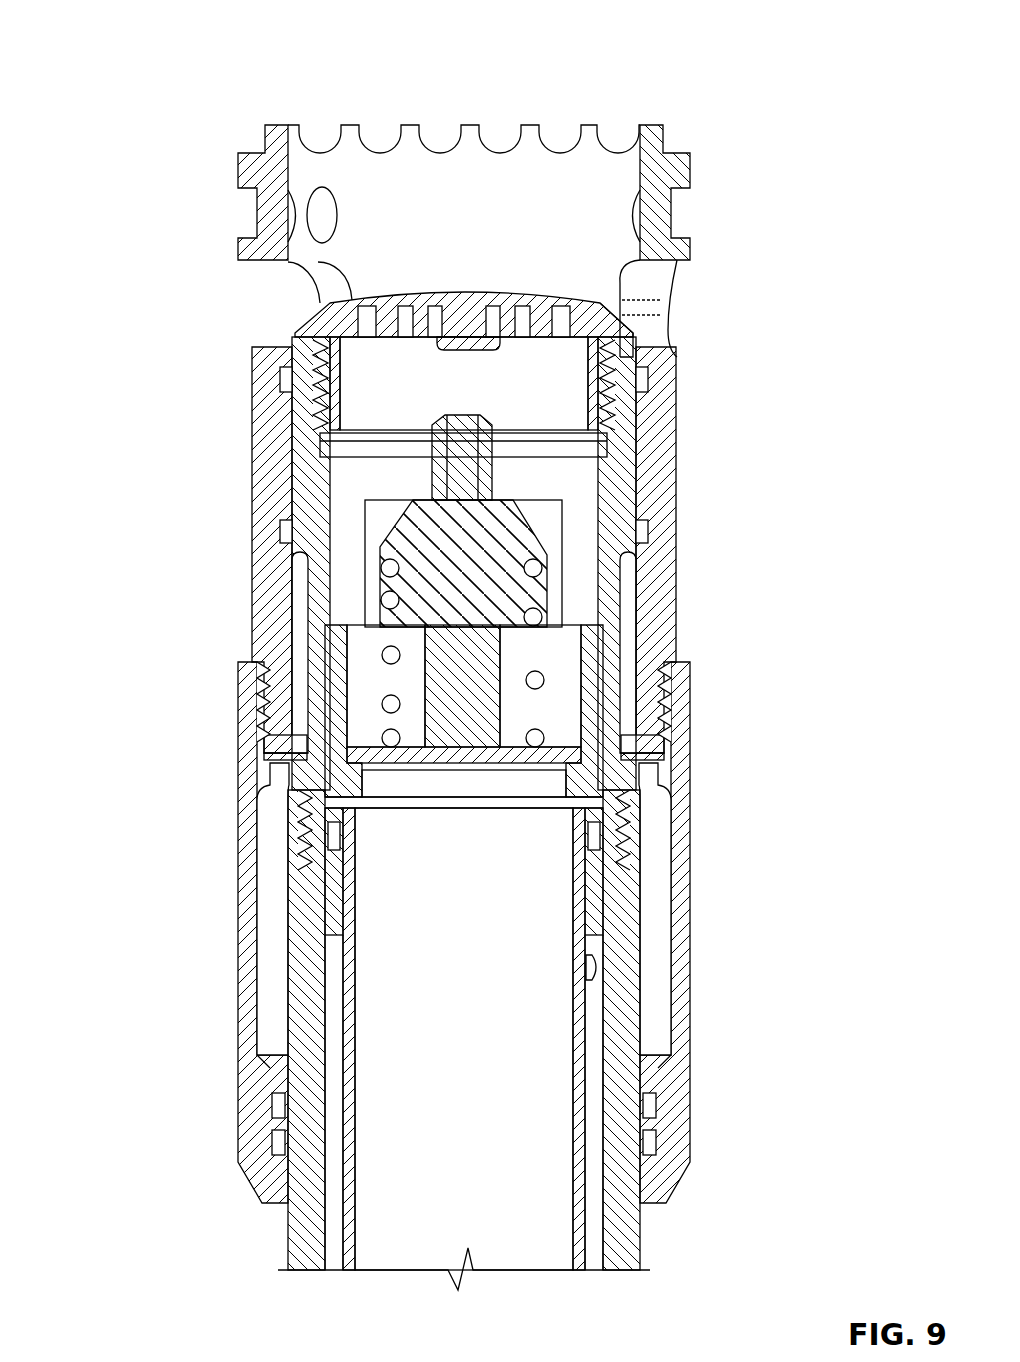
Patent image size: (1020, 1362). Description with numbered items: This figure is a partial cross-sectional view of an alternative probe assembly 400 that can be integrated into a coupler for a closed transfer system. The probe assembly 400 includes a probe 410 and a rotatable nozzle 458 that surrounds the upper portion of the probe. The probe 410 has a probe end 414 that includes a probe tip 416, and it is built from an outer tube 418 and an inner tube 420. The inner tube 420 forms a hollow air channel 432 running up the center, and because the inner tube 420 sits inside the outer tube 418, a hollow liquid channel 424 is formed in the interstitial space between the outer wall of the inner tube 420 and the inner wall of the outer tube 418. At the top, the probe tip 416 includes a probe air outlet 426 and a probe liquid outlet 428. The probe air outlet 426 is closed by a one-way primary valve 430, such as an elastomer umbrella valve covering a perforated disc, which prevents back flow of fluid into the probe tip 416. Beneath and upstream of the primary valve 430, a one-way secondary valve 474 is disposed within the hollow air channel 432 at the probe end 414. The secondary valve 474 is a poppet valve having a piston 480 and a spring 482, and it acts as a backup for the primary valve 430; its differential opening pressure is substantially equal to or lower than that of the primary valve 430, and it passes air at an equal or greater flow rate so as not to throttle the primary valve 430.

The probe assembly 400 is at (118, 50).
The one-way primary valve 430 is at (478, 284).
The probe air outlet 426 is at (540, 372).
The probe tip 416 is at (618, 455).
The rotatable nozzle 458 is at (665, 512).
The one-way secondary valve 474 is at (610, 625).
The spring 482 is at (545, 680).
The piston 480 is at (572, 765).
The probe end 414 is at (216, 913).
The hollow air channel 432 is at (392, 942).
The hollow liquid channel 424 is at (333, 1000).
The probe liquid outlet 428 is at (594, 968).
The probe 410 is at (300, 1250).
The inner tube 420 is at (578, 1200).
The outer tube 418 is at (625, 1250).